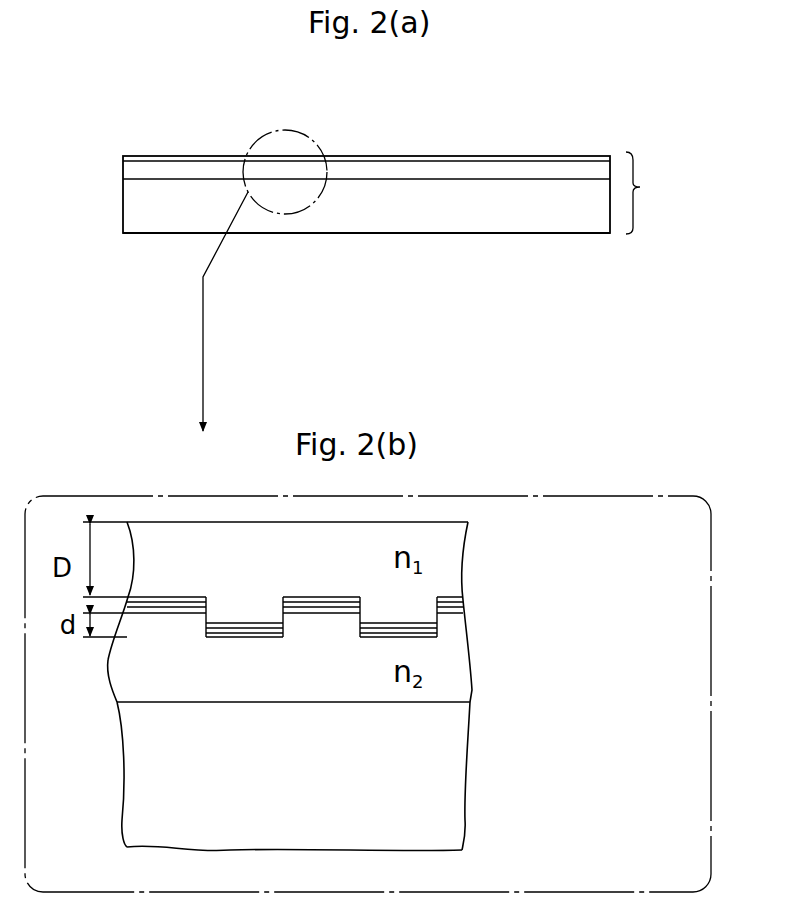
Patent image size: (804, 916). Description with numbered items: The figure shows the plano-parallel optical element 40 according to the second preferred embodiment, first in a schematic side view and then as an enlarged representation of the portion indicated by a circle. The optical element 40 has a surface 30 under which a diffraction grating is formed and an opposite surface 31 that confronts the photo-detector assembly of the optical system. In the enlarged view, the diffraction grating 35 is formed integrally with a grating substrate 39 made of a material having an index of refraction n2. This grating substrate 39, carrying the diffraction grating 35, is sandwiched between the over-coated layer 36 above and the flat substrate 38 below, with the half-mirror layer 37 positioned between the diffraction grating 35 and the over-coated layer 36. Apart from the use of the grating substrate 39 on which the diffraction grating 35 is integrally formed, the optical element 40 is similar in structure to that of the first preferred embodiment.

In FIG. 2A, the surface 30 is at (583, 155).
In FIG. 2B, the surface 30 is at (458, 517).
In FIG. 2A, the opposite surface 31 is at (580, 234).
In FIG. 2A, the plano-parallel optical element 40 is at (640, 187).
In FIG. 2B, the diffraction grating 35 is at (137, 632).
In FIG. 2B, the over-coated layer 36 is at (452, 545).
In FIG. 2B, the half-mirror layer 37 is at (468, 597).
In FIG. 2B, the flat substrate 38 is at (455, 783).
In FIG. 2B, the grating substrate 39 is at (462, 670).